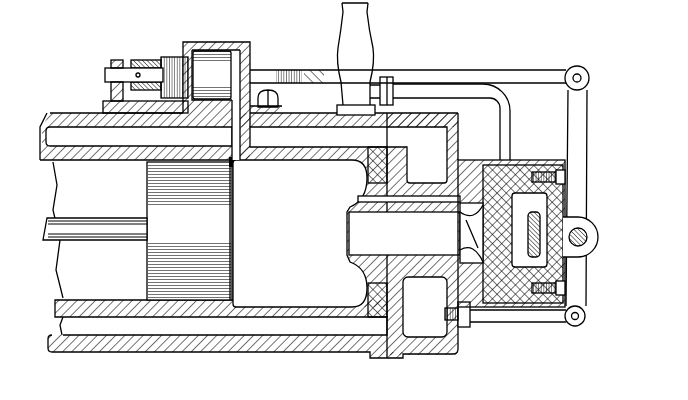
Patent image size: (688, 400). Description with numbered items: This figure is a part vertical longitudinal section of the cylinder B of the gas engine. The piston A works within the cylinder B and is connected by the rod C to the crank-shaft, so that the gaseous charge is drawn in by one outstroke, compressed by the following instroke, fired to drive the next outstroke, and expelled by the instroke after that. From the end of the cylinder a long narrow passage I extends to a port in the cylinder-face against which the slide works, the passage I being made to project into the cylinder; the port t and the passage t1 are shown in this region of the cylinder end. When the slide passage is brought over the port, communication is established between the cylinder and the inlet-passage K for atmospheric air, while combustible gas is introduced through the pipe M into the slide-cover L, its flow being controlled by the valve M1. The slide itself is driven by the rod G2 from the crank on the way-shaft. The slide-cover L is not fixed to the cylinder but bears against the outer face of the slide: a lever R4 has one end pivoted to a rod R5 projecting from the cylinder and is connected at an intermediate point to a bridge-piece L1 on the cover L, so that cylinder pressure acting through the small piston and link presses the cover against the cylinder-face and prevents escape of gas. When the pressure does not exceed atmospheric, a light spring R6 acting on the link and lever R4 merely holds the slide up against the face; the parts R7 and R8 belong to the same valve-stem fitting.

The piston A is at (193, 228).
The cylinder B is at (300, 233).
The rod C is at (95, 229).
The passage I is at (404, 233).
The port t is at (409, 194).
The valve port t1 is at (471, 233).
The inlet-passage K is at (216, 94).
The light spring R6 is at (232, 105).
The valve R7 is at (212, 75).
The stuffing box R8 is at (145, 79).
The valve M1 is at (356, 59).
The pipe M is at (440, 118).
The rod R5 is at (408, 195).
The bridge-piece L1 is at (511, 228).
The slide-cover L is at (524, 234).
The rod G2 is at (529, 230).
The lever R4 is at (580, 196).